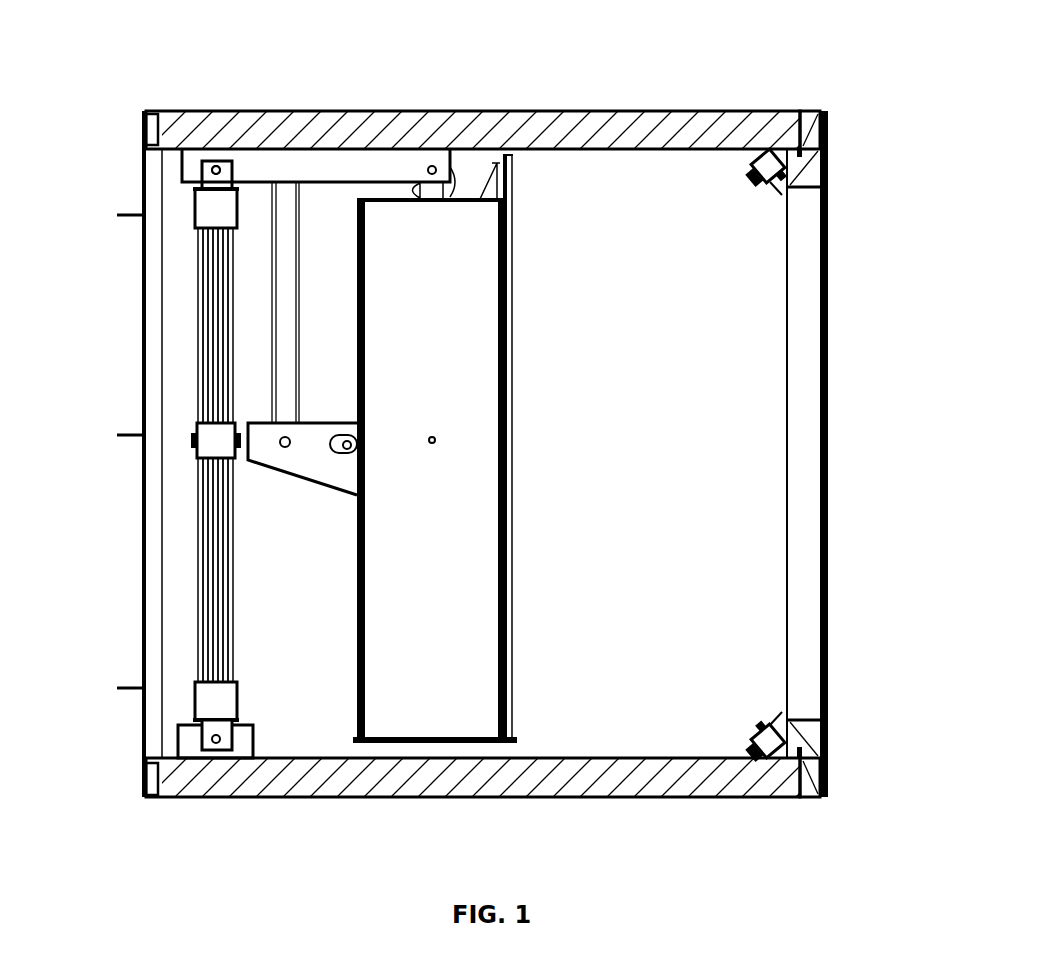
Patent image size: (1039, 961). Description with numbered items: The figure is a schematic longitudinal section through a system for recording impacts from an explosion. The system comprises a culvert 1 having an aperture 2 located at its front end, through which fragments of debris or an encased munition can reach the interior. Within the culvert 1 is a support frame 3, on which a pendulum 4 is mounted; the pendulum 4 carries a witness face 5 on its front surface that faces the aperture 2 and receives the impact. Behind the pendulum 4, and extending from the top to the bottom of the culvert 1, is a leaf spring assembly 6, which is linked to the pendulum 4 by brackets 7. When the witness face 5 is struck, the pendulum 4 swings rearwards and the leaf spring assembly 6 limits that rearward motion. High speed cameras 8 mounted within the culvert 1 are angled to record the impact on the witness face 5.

The culvert 1 is at (620, 105).
The aperture 2 is at (831, 455).
The support frame 3 is at (322, 162).
The pendulum 4 is at (404, 690).
The witness face 5 is at (514, 666).
The leaf spring assembly 6 is at (196, 323).
The brackets 7 is at (288, 464).
The high speed cameras 8 is at (769, 187).